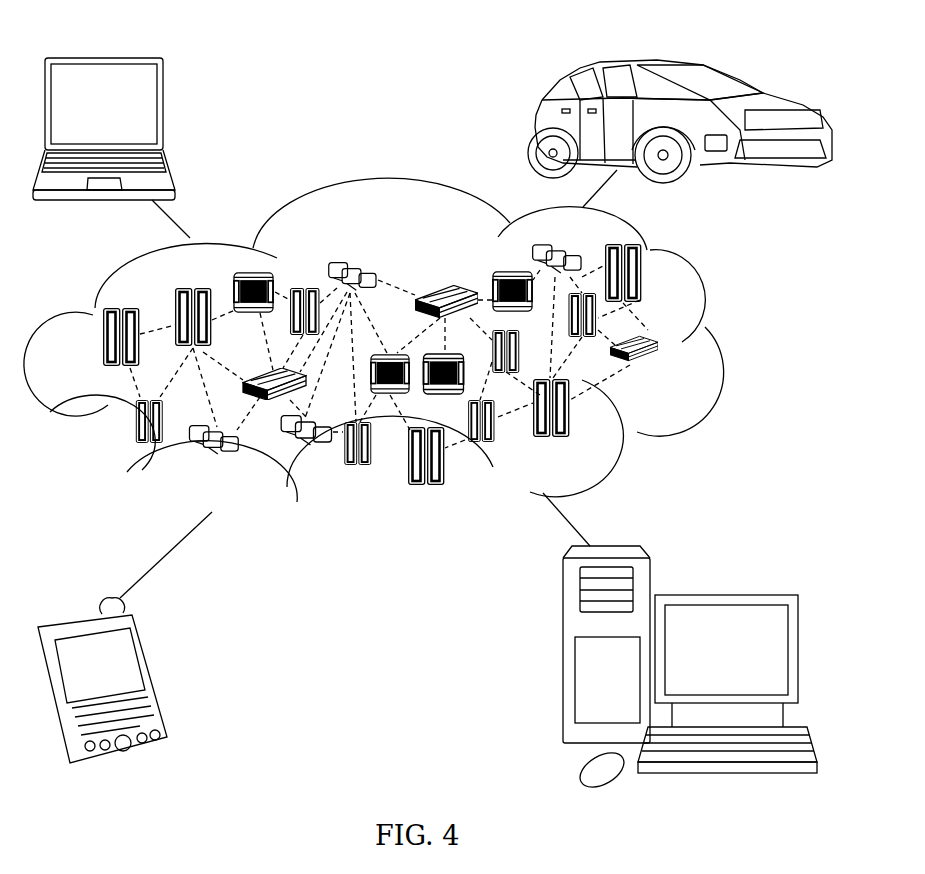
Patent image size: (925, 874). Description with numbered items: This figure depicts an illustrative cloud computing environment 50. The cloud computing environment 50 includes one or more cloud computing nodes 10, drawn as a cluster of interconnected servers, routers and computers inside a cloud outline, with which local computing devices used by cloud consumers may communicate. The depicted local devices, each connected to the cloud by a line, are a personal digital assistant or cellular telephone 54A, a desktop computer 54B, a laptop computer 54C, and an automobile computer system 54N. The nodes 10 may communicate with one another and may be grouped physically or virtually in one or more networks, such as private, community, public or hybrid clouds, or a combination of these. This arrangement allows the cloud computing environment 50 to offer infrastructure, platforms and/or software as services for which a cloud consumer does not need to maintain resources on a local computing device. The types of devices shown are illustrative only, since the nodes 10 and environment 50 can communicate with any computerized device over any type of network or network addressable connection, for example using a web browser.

The cloud computing nodes 10 is at (690, 378).
The cloud computing environment 50 is at (727, 345).
The personal digital assistant or cellular telephone 54A is at (155, 678).
The desktop computer 54B is at (723, 593).
The laptop computer 54C is at (163, 112).
The automobile computer system 54N is at (537, 125).